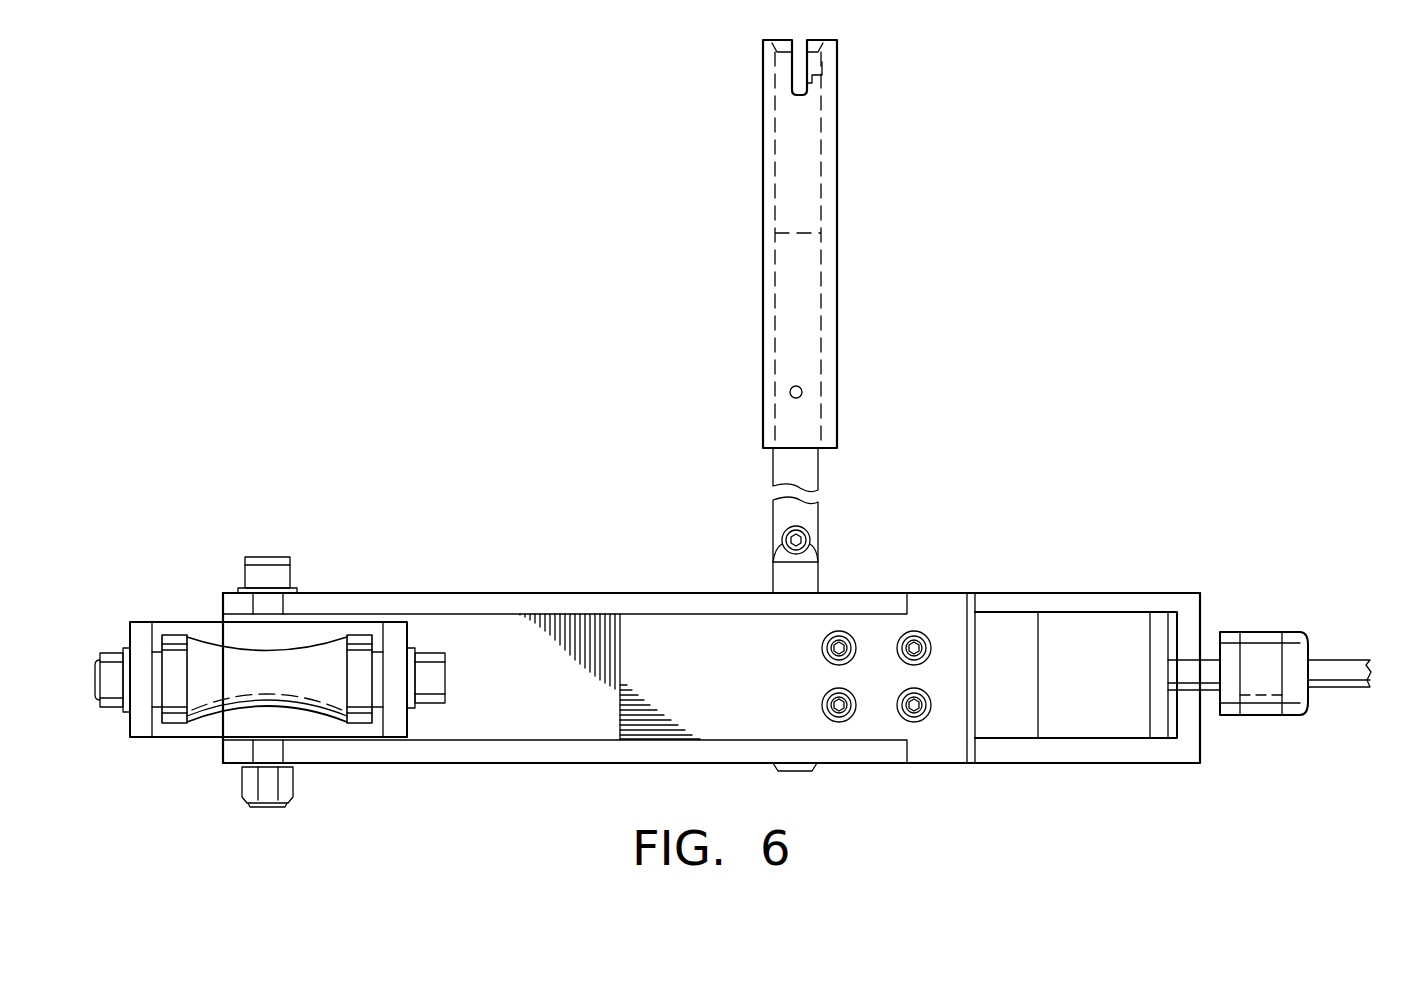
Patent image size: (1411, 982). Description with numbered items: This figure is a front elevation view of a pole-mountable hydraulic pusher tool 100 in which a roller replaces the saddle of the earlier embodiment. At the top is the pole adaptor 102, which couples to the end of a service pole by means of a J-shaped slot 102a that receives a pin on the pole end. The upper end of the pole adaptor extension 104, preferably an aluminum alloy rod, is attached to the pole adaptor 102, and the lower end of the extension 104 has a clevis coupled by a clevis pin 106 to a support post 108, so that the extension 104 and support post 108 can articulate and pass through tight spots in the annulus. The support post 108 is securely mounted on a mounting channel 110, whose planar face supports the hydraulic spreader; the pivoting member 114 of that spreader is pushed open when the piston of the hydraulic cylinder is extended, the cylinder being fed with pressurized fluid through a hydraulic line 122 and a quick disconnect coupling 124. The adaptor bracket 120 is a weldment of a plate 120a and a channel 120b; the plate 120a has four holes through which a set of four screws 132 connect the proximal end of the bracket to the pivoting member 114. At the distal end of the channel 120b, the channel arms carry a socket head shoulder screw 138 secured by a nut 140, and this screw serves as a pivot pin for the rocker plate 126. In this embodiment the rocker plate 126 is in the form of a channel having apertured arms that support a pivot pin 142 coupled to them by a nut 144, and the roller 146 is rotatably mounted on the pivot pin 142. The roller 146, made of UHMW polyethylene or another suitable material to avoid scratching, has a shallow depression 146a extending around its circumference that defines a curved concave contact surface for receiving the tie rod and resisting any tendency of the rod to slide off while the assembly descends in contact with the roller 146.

The pusher tool 100 is at (640, 466).
The pole adaptor 102 is at (764, 193).
The J-shaped slot 102a is at (812, 90).
The pole adaptor extension 104 is at (787, 461).
The clevis pin 106 is at (782, 540).
The support post 108 is at (812, 576).
The mounting channel 110 is at (1095, 592).
The pivoting member 114 is at (1073, 715).
The adaptor bracket 120 is at (655, 587).
The plate 120a is at (537, 728).
The channel 120b is at (731, 728).
The hydraulic line 122 is at (1332, 690).
The quick disconnect coupling 124 is at (1265, 715).
The rocker plate 126 is at (208, 742).
The screws 132 is at (900, 698).
The socket head shoulder screw 138 is at (243, 573).
The nut 140 is at (240, 783).
The pivot pin 142 is at (430, 678).
The nut 144 is at (110, 658).
The roller 146 is at (358, 642).
The shallow depression 146a is at (297, 713).